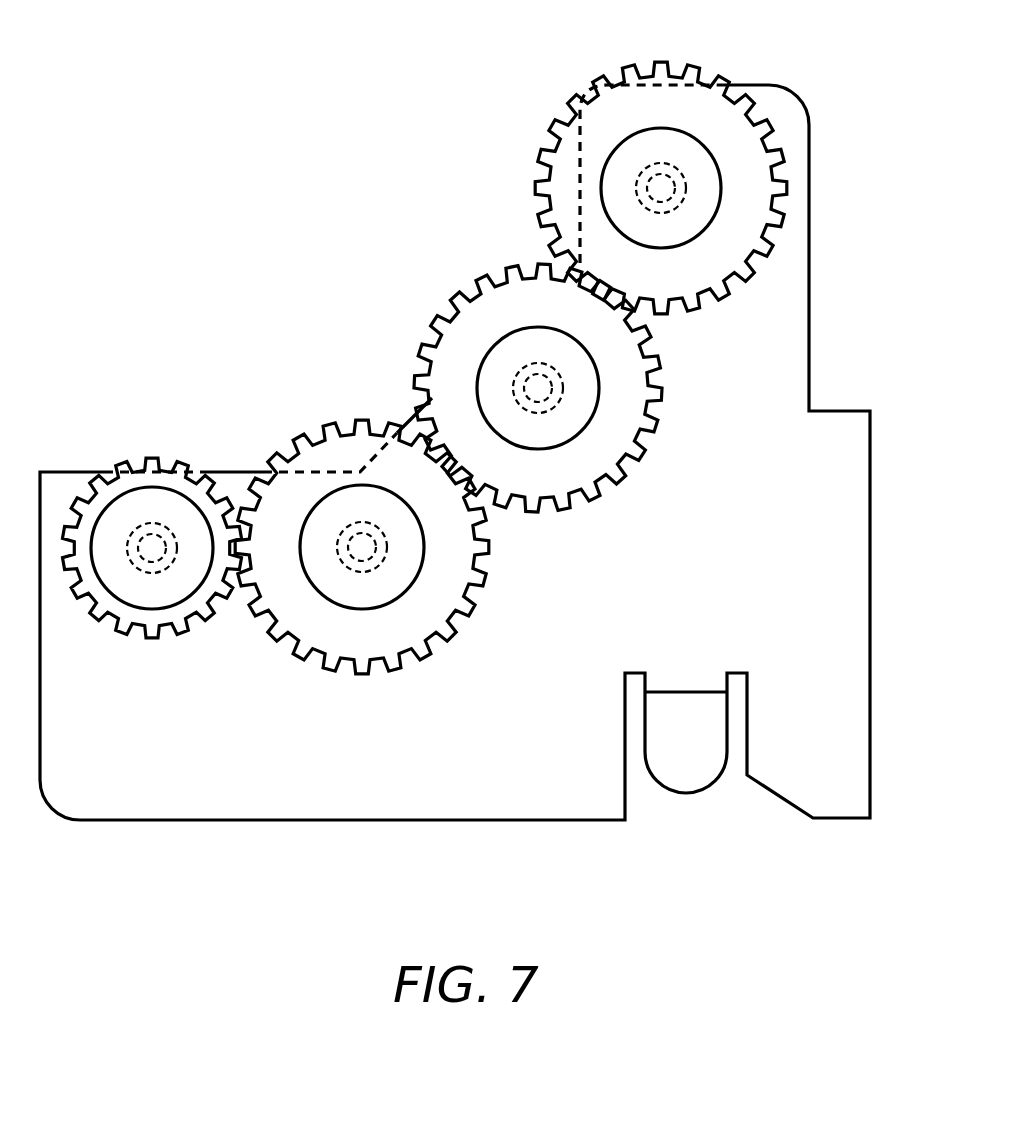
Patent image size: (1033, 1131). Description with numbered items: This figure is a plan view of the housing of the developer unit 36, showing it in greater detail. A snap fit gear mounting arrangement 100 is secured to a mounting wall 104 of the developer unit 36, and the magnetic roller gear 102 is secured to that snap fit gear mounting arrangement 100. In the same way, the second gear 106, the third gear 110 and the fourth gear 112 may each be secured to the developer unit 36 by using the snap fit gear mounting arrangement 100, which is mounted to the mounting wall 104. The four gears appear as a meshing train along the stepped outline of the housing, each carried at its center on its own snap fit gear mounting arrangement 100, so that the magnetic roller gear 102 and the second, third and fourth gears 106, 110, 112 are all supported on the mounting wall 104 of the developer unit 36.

The developer unit 36 is at (455, 445).
The snap fit gear mounting arrangement 100 is at (672, 262).
The magnetic roller gear 102 is at (655, 68).
The mounting wall 104 is at (552, 800).
The second gear 106 is at (448, 300).
The third gear 110 is at (362, 420).
The fourth gear 112 is at (150, 458).